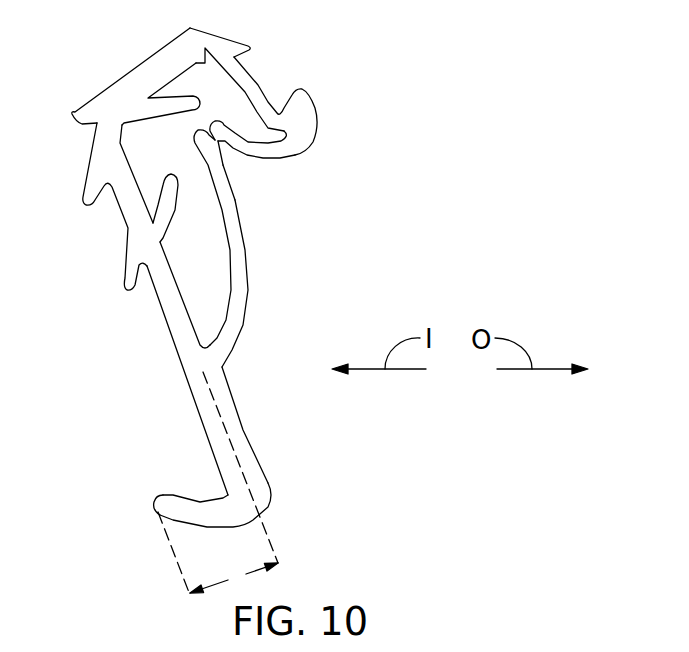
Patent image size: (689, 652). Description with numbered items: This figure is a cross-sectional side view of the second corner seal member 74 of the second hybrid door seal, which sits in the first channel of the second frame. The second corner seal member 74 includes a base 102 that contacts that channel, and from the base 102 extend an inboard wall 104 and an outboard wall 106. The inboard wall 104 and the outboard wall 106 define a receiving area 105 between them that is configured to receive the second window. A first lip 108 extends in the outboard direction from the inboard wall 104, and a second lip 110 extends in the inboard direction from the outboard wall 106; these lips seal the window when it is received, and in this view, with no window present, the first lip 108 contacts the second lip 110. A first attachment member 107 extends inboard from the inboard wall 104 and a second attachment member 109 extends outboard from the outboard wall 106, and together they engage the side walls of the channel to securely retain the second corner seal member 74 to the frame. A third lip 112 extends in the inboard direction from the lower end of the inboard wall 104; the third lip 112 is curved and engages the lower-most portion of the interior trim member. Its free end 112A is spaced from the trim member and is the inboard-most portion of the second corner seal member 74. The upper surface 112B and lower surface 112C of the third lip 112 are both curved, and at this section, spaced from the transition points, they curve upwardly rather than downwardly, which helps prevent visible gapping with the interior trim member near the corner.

The second corner seal member 74 is at (170, 340).
The base 102 is at (140, 68).
The inboard wall 104 is at (197, 400).
The receiving area 105 is at (255, 178).
The outboard wall 106 is at (258, 84).
The first attachment member 107 is at (123, 277).
The first lip 108 is at (245, 297).
The second attachment member 109 is at (220, 36).
The second lip 110 is at (272, 160).
The third lip 112 is at (165, 520).
The free end 112A is at (157, 497).
The upper surface 112B is at (190, 492).
The lower surface 112C is at (193, 523).